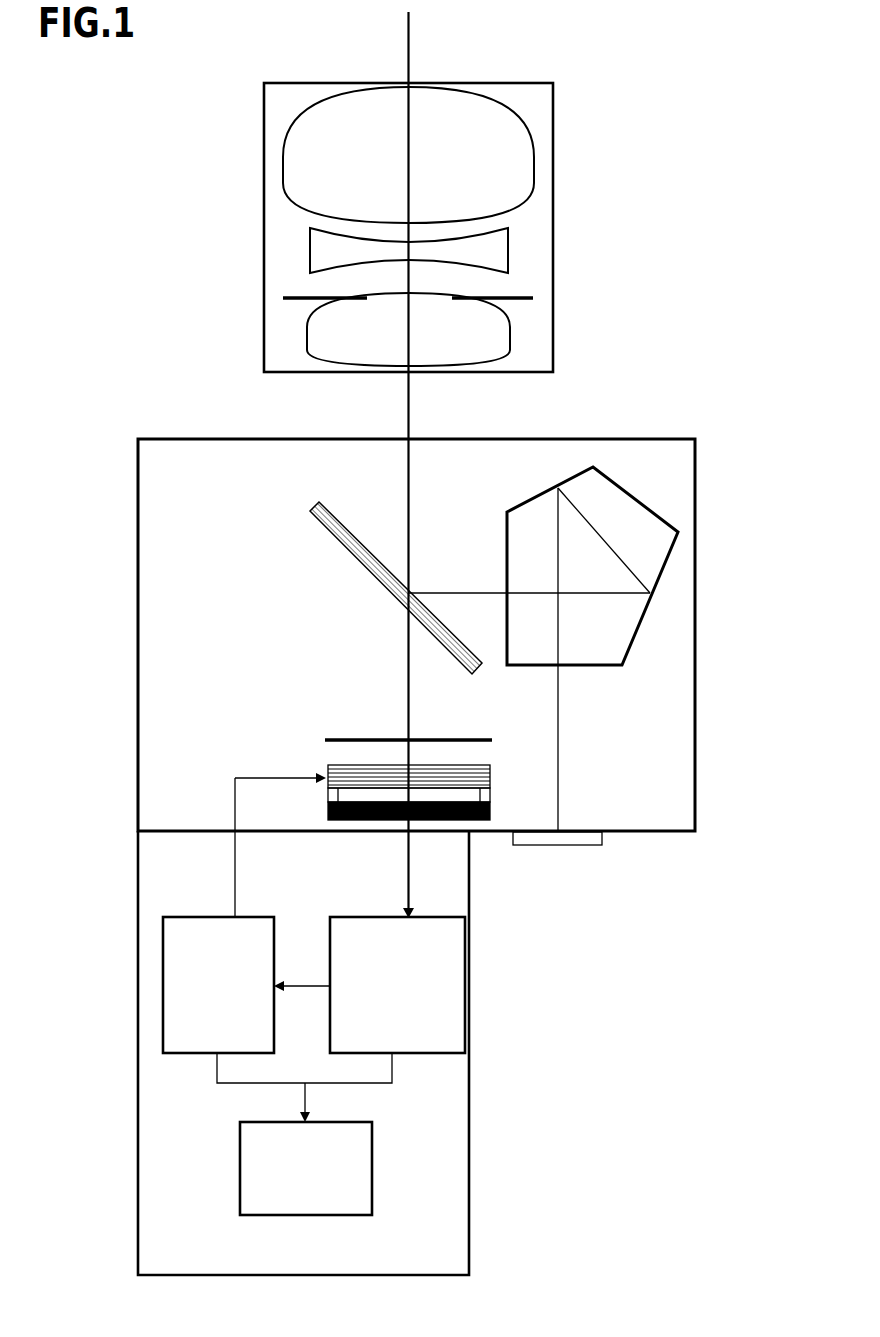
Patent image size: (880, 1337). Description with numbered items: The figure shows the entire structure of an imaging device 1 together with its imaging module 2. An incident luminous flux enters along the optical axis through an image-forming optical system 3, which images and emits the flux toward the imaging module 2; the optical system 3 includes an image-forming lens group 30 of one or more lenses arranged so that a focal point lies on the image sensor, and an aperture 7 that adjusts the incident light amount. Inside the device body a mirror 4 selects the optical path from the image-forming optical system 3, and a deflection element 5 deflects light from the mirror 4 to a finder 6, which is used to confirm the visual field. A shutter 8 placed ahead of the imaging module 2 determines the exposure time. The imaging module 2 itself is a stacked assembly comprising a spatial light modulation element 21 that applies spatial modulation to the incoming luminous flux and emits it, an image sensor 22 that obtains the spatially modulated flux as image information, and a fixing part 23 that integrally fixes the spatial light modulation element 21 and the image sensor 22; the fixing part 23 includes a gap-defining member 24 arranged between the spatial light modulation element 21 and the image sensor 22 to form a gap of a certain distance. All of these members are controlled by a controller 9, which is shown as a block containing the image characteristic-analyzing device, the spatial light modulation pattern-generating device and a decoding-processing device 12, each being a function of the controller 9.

The imaging device 1 is at (754, 784).
The imaging module 2 is at (395, 826).
The image-forming optical system 3 is at (553, 145).
The mirror 4 is at (335, 540).
The deflection element 5 is at (673, 558).
The finder 6 is at (603, 838).
The aperture 7 is at (533, 298).
The shutter 8 is at (492, 740).
The controller 9 is at (341, 1053).
The decoding-processing device 12 is at (238, 1140).
The spatial light modulation element 21 is at (327, 772).
The image sensor 22 is at (492, 808).
The fixing part 23 is at (312, 795).
The gap-defining member 24 is at (488, 797).
The image-forming lens group 30 is at (281, 100).